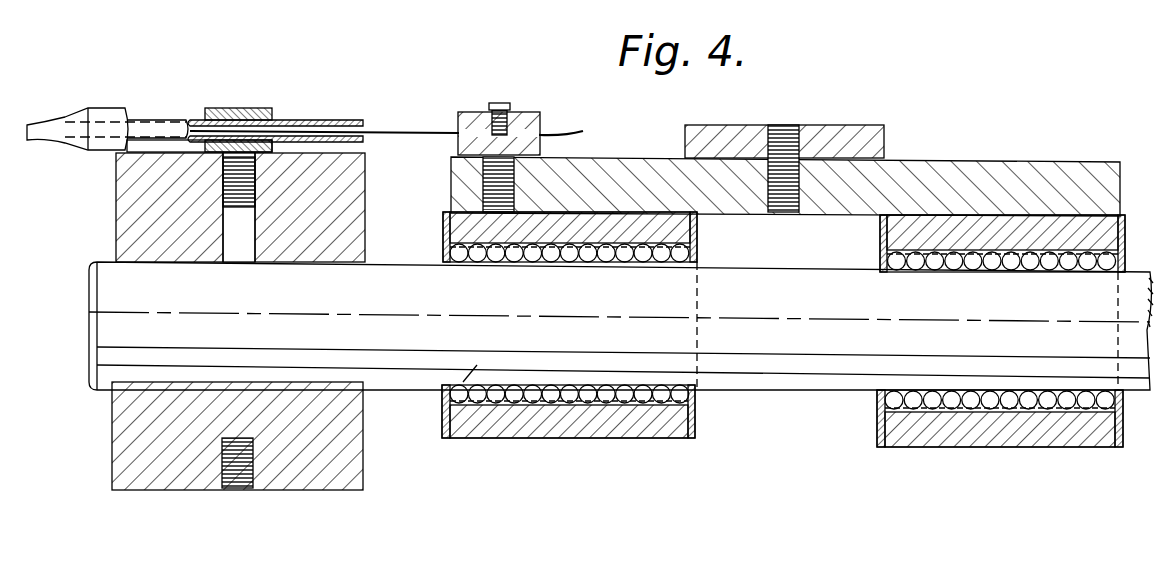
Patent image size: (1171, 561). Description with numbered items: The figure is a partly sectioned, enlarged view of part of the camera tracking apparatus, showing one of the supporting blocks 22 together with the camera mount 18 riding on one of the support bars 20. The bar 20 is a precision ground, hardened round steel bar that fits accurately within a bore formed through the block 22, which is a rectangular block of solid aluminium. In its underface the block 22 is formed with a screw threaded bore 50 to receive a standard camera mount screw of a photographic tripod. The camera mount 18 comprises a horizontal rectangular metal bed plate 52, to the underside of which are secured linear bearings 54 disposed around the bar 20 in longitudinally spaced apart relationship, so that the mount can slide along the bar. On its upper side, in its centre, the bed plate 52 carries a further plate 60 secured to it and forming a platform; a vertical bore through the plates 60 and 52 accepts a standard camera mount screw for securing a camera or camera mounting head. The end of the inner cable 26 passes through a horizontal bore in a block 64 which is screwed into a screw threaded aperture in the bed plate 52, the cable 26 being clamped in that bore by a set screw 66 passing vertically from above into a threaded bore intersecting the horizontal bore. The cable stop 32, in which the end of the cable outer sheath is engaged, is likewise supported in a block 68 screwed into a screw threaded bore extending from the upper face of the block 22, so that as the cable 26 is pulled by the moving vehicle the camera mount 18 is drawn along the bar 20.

The camera mount 18 is at (804, 294).
The support bars 20 is at (398, 373).
The supporting blocks 22 is at (145, 482).
The inner cable 26 is at (413, 132).
The cable stop 32 is at (113, 115).
The screw threaded bore 50 is at (245, 477).
The bed plate 52 is at (1107, 193).
The linear bearings 54 is at (532, 402).
The further plate 60 is at (884, 137).
The block 64 is at (542, 120).
The set screw 66 is at (502, 103).
The block 68 is at (253, 110).